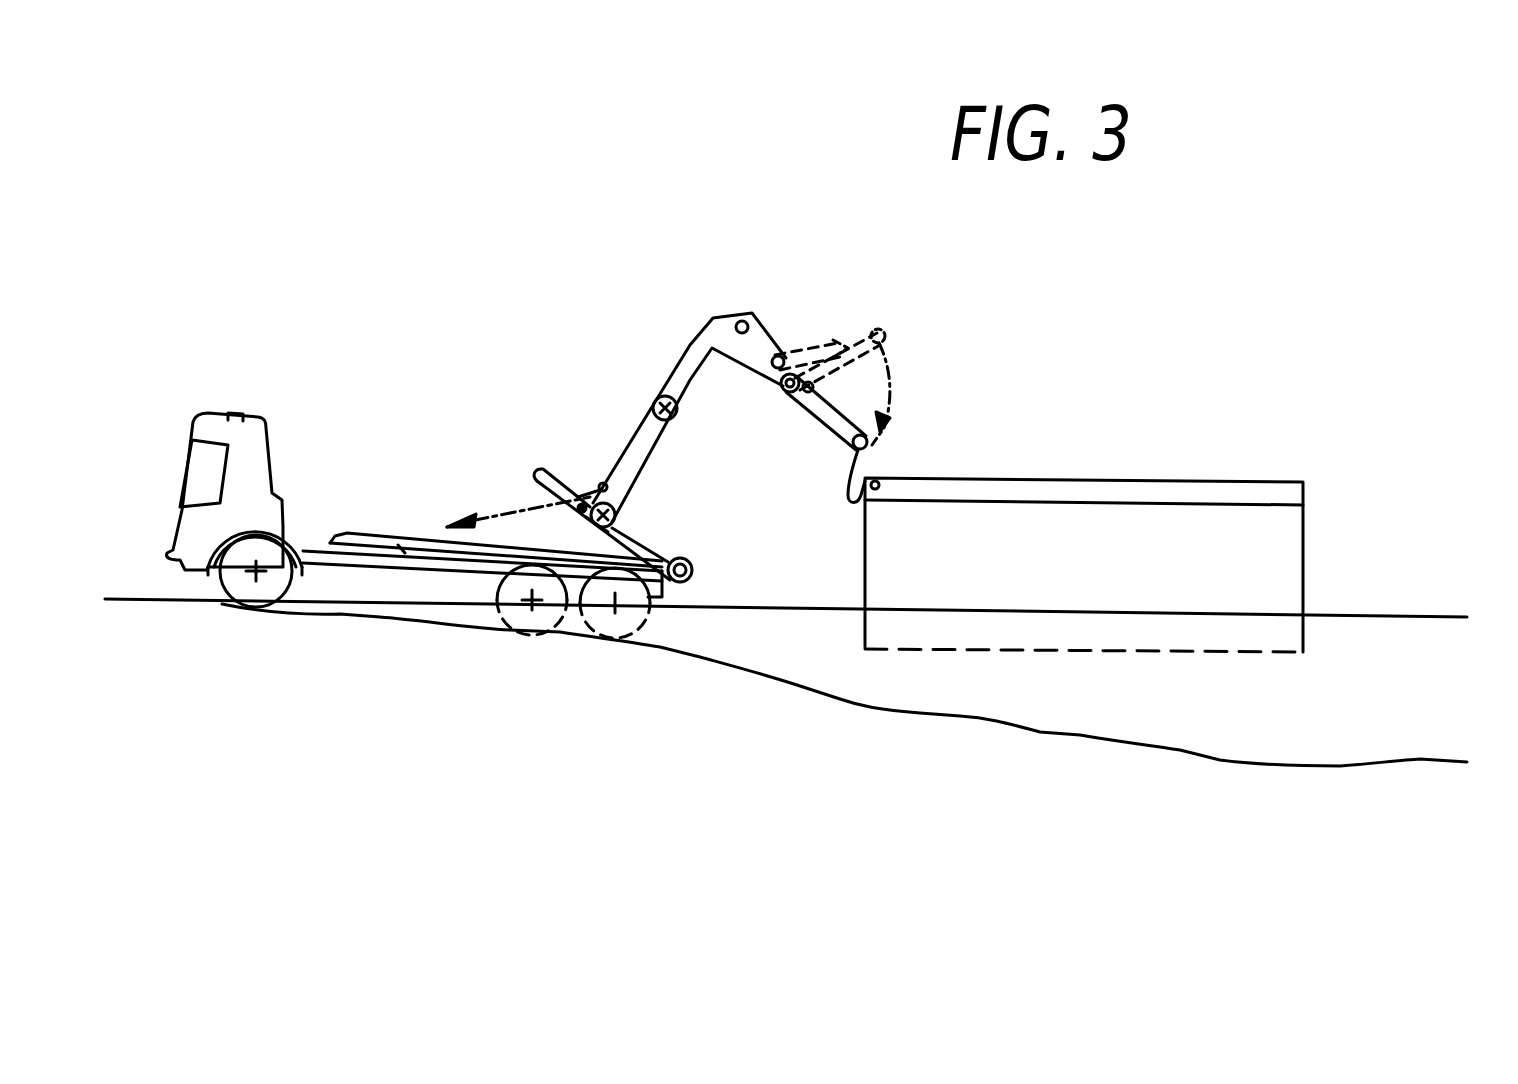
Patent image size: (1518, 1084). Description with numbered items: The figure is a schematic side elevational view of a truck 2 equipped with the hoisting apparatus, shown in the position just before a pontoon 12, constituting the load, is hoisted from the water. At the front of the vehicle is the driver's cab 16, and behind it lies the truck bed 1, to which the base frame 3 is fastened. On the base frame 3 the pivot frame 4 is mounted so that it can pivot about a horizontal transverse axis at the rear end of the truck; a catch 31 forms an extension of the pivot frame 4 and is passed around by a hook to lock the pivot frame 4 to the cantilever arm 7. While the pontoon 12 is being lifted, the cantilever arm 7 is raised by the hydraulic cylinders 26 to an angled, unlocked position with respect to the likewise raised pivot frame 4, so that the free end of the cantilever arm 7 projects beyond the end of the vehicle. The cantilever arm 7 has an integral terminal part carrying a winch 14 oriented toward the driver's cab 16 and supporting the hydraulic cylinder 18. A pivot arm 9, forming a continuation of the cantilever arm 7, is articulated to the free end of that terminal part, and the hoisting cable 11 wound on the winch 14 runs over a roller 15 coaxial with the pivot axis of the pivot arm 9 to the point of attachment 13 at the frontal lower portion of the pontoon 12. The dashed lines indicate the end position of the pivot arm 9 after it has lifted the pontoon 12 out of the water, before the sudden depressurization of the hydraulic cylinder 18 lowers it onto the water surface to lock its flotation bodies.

The truck bed 1 is at (448, 572).
The truck 2 is at (347, 567).
The base frame 3 is at (368, 545).
The pivot frame 4 is at (625, 543).
The cantilever arm 7 is at (677, 377).
The pivot arm 9 is at (853, 330).
The hoisting cable 11 is at (848, 483).
The pontoon 12 is at (1099, 490).
The point of attachment 13 is at (878, 487).
The winch 14 is at (755, 320).
The roller 15 is at (783, 388).
The driver's cab 16 is at (250, 442).
The hydraulic cylinder 18 is at (803, 342).
The hydraulic cylinders 26 is at (527, 512).
The catch 31 is at (548, 474).